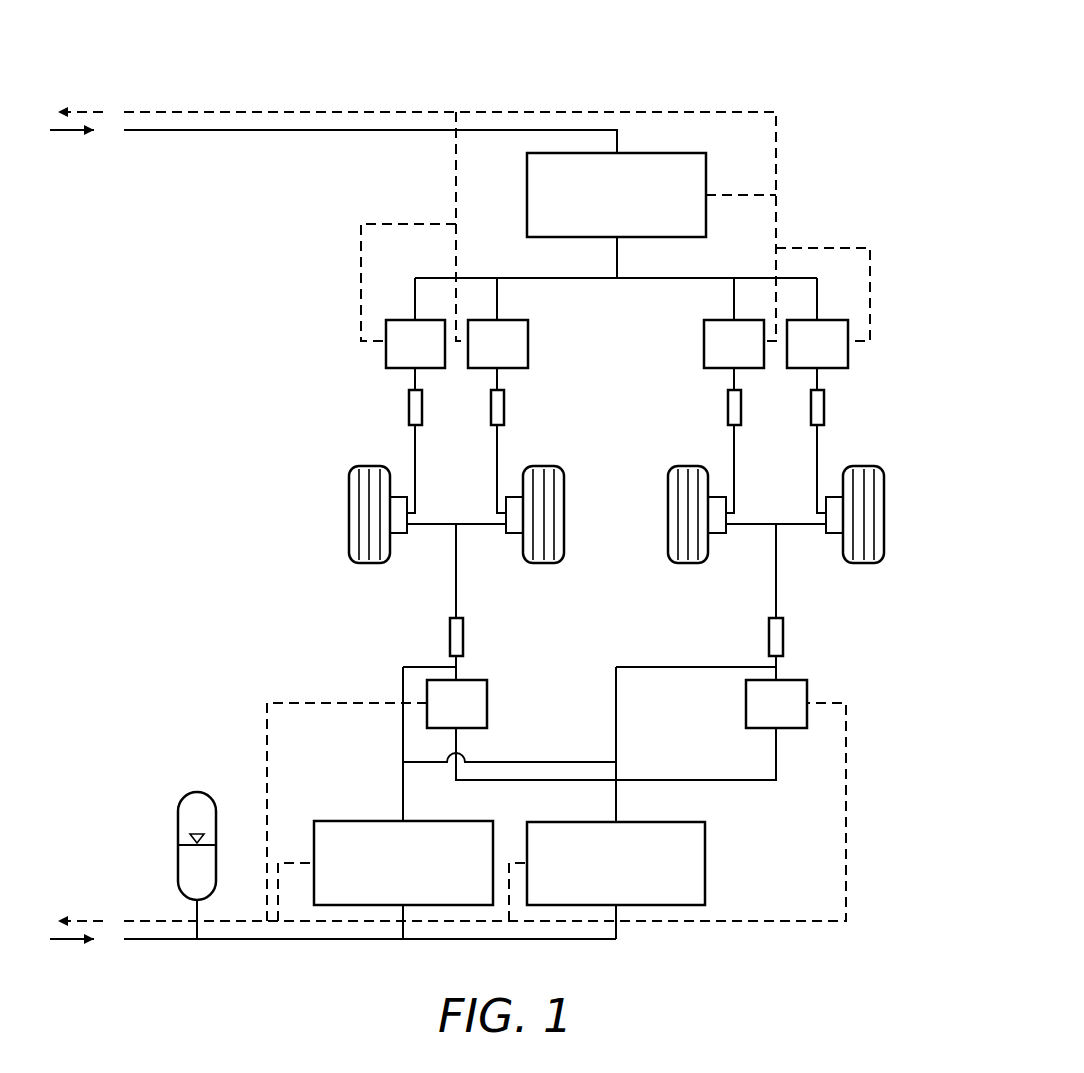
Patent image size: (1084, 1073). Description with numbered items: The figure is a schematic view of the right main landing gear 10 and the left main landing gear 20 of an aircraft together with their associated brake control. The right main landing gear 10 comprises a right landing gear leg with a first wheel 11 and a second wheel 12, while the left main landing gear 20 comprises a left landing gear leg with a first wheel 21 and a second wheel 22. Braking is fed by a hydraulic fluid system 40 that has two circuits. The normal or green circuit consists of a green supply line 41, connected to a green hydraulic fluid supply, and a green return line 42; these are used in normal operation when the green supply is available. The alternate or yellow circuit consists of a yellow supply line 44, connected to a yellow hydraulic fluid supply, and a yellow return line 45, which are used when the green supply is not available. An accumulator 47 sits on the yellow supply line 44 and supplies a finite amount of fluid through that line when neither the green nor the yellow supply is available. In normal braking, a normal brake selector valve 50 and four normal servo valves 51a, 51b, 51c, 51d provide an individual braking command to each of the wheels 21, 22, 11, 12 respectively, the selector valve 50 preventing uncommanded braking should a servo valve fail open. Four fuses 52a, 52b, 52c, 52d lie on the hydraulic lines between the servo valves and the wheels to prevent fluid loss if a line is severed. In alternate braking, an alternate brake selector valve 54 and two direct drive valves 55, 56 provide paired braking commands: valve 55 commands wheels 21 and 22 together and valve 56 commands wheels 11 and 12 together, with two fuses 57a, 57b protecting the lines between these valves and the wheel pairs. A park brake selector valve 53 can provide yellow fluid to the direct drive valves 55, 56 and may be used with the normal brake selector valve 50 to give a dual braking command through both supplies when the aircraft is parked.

The hydraulic fluid system 40 is at (843, 56).
The normal/green supply line 41 is at (185, 130).
The normal/green return line 42 is at (183, 112).
The alternate/yellow supply line 44 is at (150, 939).
The alternate/yellow return line 45 is at (145, 921).
The accumulator 47 is at (197, 792).
The normal brake selector valve 50 is at (600, 207).
The normal servo valve 51a is at (386, 355).
The normal servo valve 51b is at (528, 332).
The normal servo valve 51c is at (704, 332).
The normal servo valve 51d is at (848, 355).
The fuse 52a is at (409, 405).
The fuse 52b is at (504, 405).
The fuse 52c is at (728, 405).
The fuse 52d is at (824, 405).
The park brake selector valve 53 is at (386, 874).
The alternate brake selector valve 54 is at (599, 874).
The direct drive valve 55 is at (487, 693).
The direct drive valve 56 is at (746, 693).
The fuse 57a is at (450, 633).
The fuse 57b is at (783, 633).
The right main landing gear 10 is at (654, 468).
The first wheel 11 is at (690, 563).
The second wheel 12 is at (884, 545).
The left main landing gear 20 is at (334, 468).
The first wheel 21 is at (349, 545).
The second wheel 22 is at (545, 563).